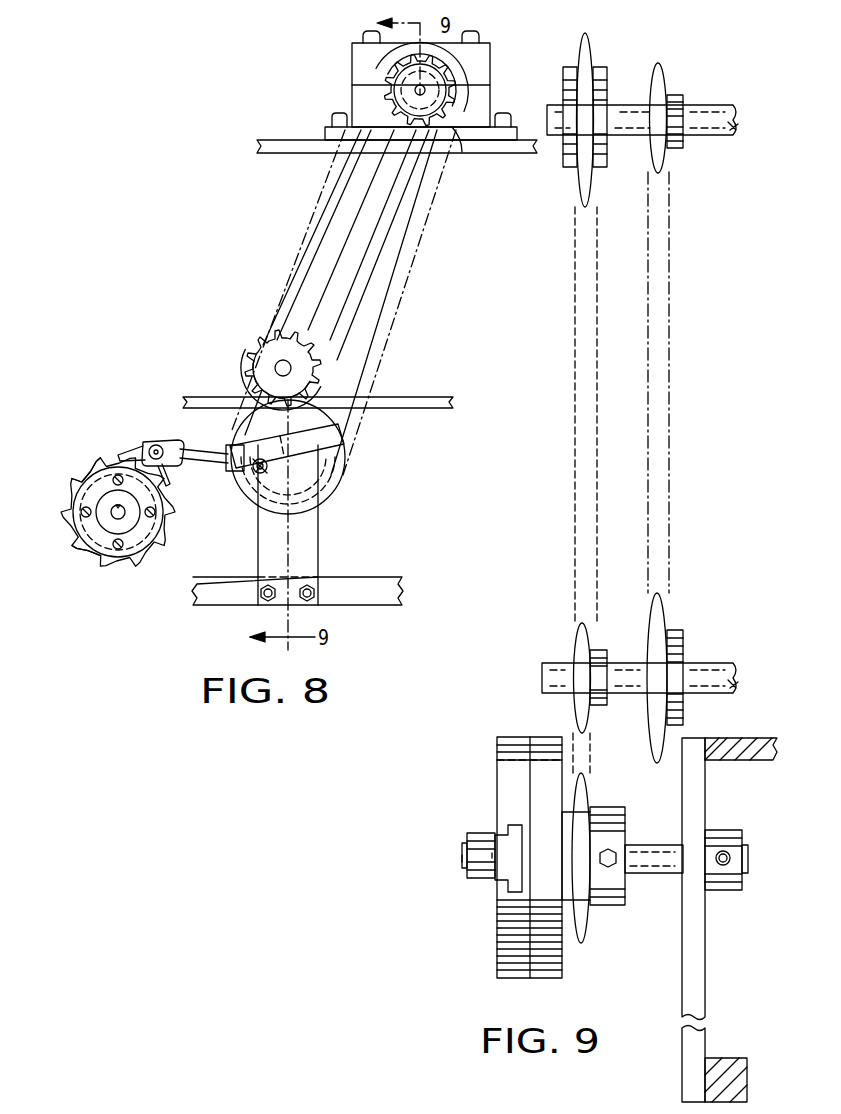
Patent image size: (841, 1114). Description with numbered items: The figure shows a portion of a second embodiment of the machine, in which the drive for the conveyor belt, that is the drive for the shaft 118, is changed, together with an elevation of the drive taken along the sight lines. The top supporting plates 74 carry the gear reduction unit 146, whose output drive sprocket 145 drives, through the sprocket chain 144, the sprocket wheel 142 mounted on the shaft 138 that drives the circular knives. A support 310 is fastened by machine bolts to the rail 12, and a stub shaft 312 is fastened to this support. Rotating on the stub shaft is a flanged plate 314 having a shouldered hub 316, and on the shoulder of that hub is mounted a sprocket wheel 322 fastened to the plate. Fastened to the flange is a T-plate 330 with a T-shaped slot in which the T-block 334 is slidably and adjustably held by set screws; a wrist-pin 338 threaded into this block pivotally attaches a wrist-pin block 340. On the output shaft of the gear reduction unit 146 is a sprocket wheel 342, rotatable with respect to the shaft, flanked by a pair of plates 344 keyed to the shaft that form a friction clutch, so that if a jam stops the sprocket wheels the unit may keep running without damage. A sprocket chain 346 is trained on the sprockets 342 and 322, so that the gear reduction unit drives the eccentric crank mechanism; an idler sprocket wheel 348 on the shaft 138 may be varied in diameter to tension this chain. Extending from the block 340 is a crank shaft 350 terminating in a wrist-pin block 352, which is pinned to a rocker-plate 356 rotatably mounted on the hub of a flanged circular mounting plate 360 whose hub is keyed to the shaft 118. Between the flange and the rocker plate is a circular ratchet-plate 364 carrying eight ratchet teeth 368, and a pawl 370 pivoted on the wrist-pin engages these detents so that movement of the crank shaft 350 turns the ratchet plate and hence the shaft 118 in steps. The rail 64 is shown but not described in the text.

In FIG. 8, the rail 12 is at (227, 590).
In FIG. 9, the rail 12 is at (732, 1067).
In FIG. 8, the support rail 64 is at (378, 408).
In FIG. 9, the support rail 64 is at (745, 752).
In FIG. 8, the top supporting plates 74 is at (318, 146).
In FIG. 8, the drive shaft 118 is at (112, 514).
In FIG. 8, the shaft 138 is at (276, 364).
In FIG. 9, the shaft 138 is at (710, 677).
In FIG. 8, the sprocket wheel 142 is at (262, 366).
In FIG. 9, the sprocket wheel 142 is at (657, 618).
In FIG. 8, the sprocket chain 144 is at (270, 330).
In FIG. 9, the sprocket chain 144 is at (672, 440).
In FIG. 8, the output drive sprocket 145 is at (455, 78).
In FIG. 9, the output drive sprocket 145 is at (657, 92).
In FIG. 8, the gear reduction unit 146 is at (352, 68).
In FIG. 8, the support 310 is at (303, 550).
In FIG. 9, the support 310 is at (692, 938).
In FIG. 9, the stub shaft 312 is at (672, 823).
In FIG. 9, the flanged plate 314 is at (547, 740).
In FIG. 9, the shouldered hub 316 is at (568, 867).
In FIG. 9, the sprocket wheel 322 is at (582, 800).
In FIG. 8, the T-plate 330 is at (335, 477).
In FIG. 9, the T-plate 330 is at (497, 768).
In FIG. 8, the T-block 334 is at (262, 490).
In FIG. 9, the T-block 334 is at (508, 863).
In FIG. 9, the wrist-pin 338 is at (460, 873).
In FIG. 8, the wrist-pin block 340 is at (252, 477).
In FIG. 9, the wrist-pin block 340 is at (478, 843).
In FIG. 9, the sprocket wheel 342 is at (583, 57).
In FIG. 8, the friction clutch plates 344 is at (455, 132).
In FIG. 9, the friction clutch plates 344 is at (570, 100).
In FIG. 8, the sprocket chain 346 is at (407, 268).
In FIG. 9, the sprocket chain 346 is at (570, 323).
In FIG. 8, the idler sprocket wheel 348 is at (312, 379).
In FIG. 9, the idler sprocket wheel 348 is at (577, 662).
In FIG. 8, the crank shaft 350 is at (221, 436).
In FIG. 8, the wrist-pin block 352 is at (170, 440).
In FIG. 8, the rocker-plate 356 is at (238, 462).
In FIG. 8, the flanged circular mounting plate 360 is at (140, 545).
In FIG. 8, the ratchet-plate 364 is at (100, 557).
In FIG. 8, the ratchet teeth 368 is at (87, 470).
In FIG. 8, the pawl 370 is at (125, 448).